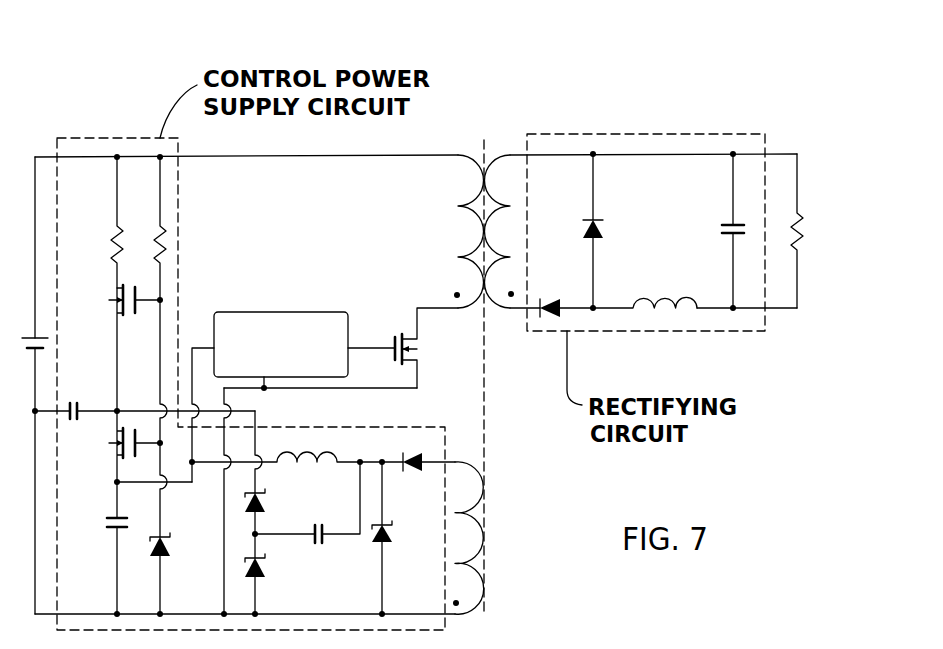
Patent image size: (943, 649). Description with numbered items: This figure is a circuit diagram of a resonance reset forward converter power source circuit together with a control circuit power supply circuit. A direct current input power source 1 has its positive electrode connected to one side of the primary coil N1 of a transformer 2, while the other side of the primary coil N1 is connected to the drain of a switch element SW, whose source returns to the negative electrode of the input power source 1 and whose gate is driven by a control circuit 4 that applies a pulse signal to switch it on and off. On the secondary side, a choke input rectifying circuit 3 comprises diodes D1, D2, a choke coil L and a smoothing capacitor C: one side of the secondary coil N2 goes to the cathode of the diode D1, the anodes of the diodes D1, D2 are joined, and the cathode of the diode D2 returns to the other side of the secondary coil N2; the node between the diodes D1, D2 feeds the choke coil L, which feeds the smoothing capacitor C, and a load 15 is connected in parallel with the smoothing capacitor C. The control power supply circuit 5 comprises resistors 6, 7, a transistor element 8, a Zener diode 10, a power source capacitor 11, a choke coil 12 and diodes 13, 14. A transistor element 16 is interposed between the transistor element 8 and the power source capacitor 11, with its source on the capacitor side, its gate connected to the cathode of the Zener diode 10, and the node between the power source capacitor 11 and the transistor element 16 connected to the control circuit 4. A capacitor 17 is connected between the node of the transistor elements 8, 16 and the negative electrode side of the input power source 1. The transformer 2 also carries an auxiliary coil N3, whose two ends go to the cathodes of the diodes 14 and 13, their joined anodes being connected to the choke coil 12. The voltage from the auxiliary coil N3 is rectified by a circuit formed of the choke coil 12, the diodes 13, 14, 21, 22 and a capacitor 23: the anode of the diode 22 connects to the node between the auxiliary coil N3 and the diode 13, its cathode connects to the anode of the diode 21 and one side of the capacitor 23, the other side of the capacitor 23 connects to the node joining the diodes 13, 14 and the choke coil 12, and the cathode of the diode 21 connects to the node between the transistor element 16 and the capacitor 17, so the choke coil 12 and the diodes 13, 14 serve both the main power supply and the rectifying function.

The direct current input power source 1 is at (34, 338).
The transformer 2 is at (490, 356).
The choke input rectifying circuit 3 is at (653, 215).
The control circuit 4 is at (259, 312).
The control power supply circuit 5 is at (85, 138).
The resistor 6 is at (113, 248).
The resistor 7 is at (168, 247).
The transistor element 8 is at (117, 305).
The Zener diode 10 is at (165, 541).
The power source capacitor 11 is at (108, 527).
The choke coil 12 is at (318, 455).
The diode 13 is at (390, 545).
The diode 14 is at (408, 472).
The load 15 is at (797, 237).
The transistor element 16 is at (115, 453).
The capacitor 17 is at (76, 420).
The diode 21 is at (267, 502).
The diode 22 is at (266, 569).
The capacitor 23 is at (322, 542).
The switch element SW is at (396, 336).
The primary coil N1 is at (480, 229).
The secondary coil N2 is at (488, 229).
The auxiliary coil N3 is at (480, 536).
The diode D1 is at (550, 299).
The diode D2 is at (603, 226).
The choke coil L is at (662, 304).
The smoothing capacitor C is at (728, 224).